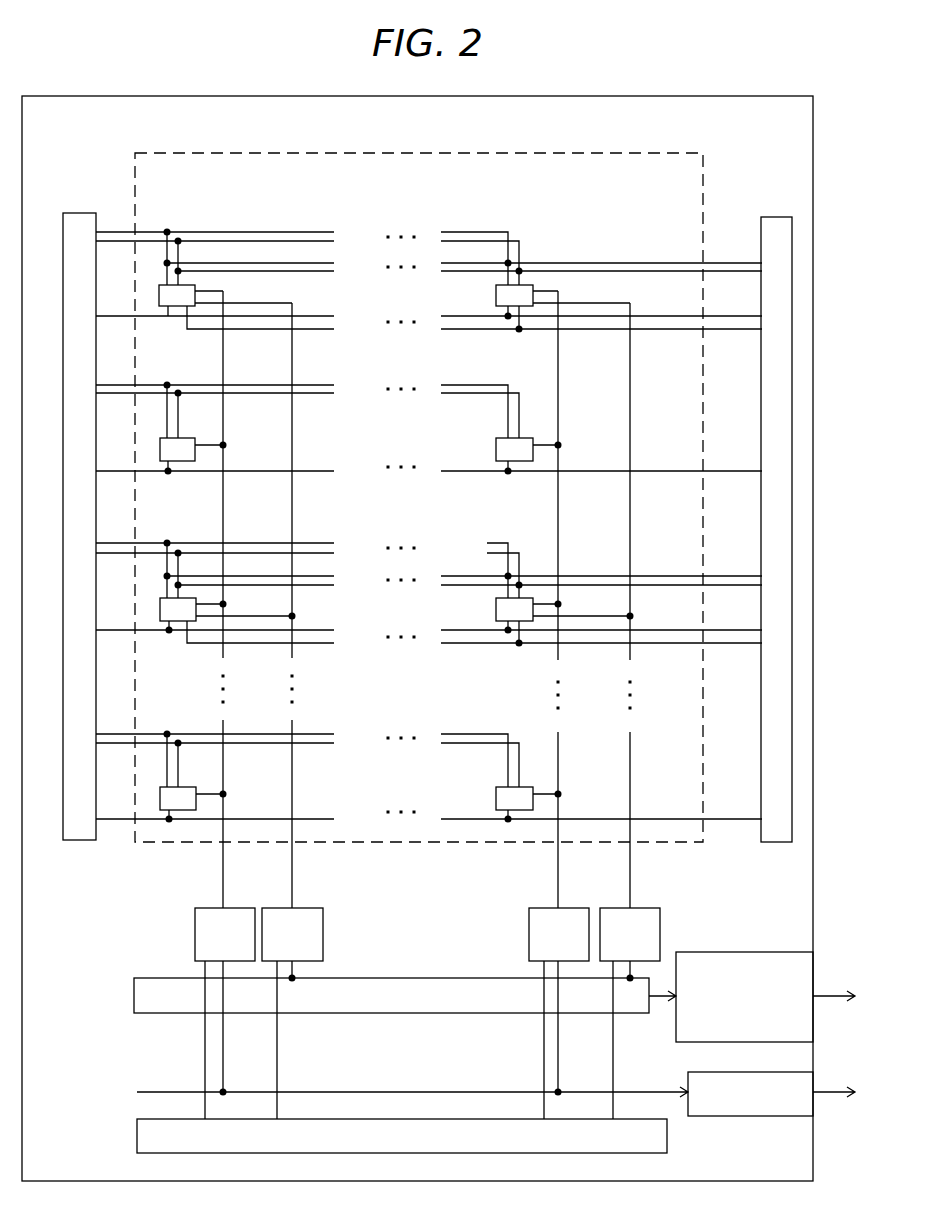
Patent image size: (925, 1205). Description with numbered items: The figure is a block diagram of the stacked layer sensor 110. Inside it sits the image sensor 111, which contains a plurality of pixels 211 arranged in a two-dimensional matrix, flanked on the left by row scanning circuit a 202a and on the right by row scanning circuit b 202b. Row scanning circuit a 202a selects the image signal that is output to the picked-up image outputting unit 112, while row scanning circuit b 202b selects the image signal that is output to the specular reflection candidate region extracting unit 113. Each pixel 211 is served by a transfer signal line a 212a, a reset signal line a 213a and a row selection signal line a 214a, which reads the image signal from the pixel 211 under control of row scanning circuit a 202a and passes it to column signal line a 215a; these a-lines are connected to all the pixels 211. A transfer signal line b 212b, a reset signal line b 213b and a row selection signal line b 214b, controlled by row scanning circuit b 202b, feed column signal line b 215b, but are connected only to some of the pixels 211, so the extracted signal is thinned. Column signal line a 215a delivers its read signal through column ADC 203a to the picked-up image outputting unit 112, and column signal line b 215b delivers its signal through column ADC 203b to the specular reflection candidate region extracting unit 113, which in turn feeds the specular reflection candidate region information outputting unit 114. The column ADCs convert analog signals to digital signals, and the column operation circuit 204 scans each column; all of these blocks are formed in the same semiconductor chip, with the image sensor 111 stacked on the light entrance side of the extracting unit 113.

The stacked layer sensor 110 is at (32, 96).
The image sensor 111 is at (136, 174).
The picked-up image outputting unit 112 is at (773, 1120).
The specular reflection candidate region extracting unit 113 is at (134, 994).
The specular reflection candidate region information outputting unit 114 is at (746, 952).
The row scanning circuit a 202a is at (70, 215).
The row scanning circuit b 202b is at (775, 217).
The column ADC a 203a is at (204, 908).
The column ADC b 203b is at (276, 908).
The column operation circuit 204 is at (137, 1132).
The pixel 211 is at (160, 298).
The transfer signal line a 212a is at (196, 226).
The transfer signal line b 212b is at (303, 262).
The reset signal line a 213a is at (291, 240).
The reset signal line b 213b is at (228, 272).
The row selection signal line a 214a is at (313, 315).
The row selection signal line b 214b is at (328, 329).
The column signal line a 215a is at (224, 354).
The column signal line b 215b is at (293, 360).